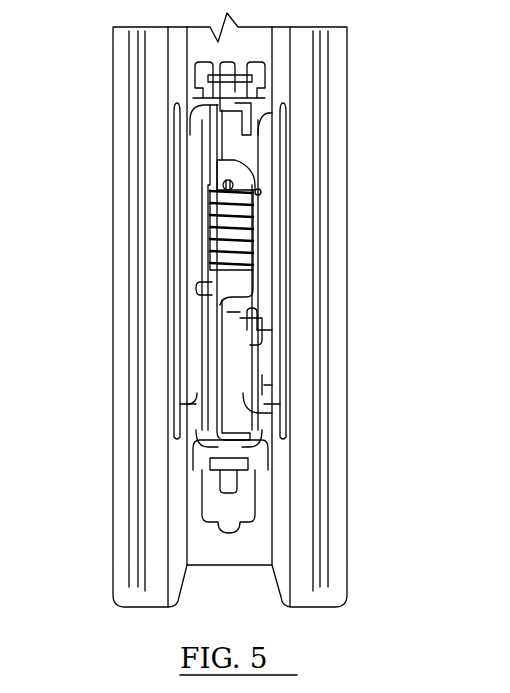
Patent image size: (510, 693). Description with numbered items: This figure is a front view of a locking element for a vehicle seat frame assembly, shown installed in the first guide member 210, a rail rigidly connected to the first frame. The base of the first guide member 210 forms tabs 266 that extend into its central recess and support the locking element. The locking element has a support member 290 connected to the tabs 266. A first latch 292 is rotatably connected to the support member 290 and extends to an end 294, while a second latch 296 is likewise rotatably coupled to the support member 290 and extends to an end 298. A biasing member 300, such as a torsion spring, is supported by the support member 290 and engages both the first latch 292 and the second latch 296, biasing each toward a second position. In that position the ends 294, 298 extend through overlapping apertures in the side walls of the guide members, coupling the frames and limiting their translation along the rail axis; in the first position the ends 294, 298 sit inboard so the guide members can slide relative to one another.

The first guide member 210 is at (177, 62).
The tabs 266 is at (242, 72).
The support member 290 is at (233, 92).
The first latch 292 is at (267, 377).
The end 294 is at (277, 408).
The second latch 296 is at (196, 180).
The end 298 is at (177, 127).
The biasing member 300 is at (232, 222).